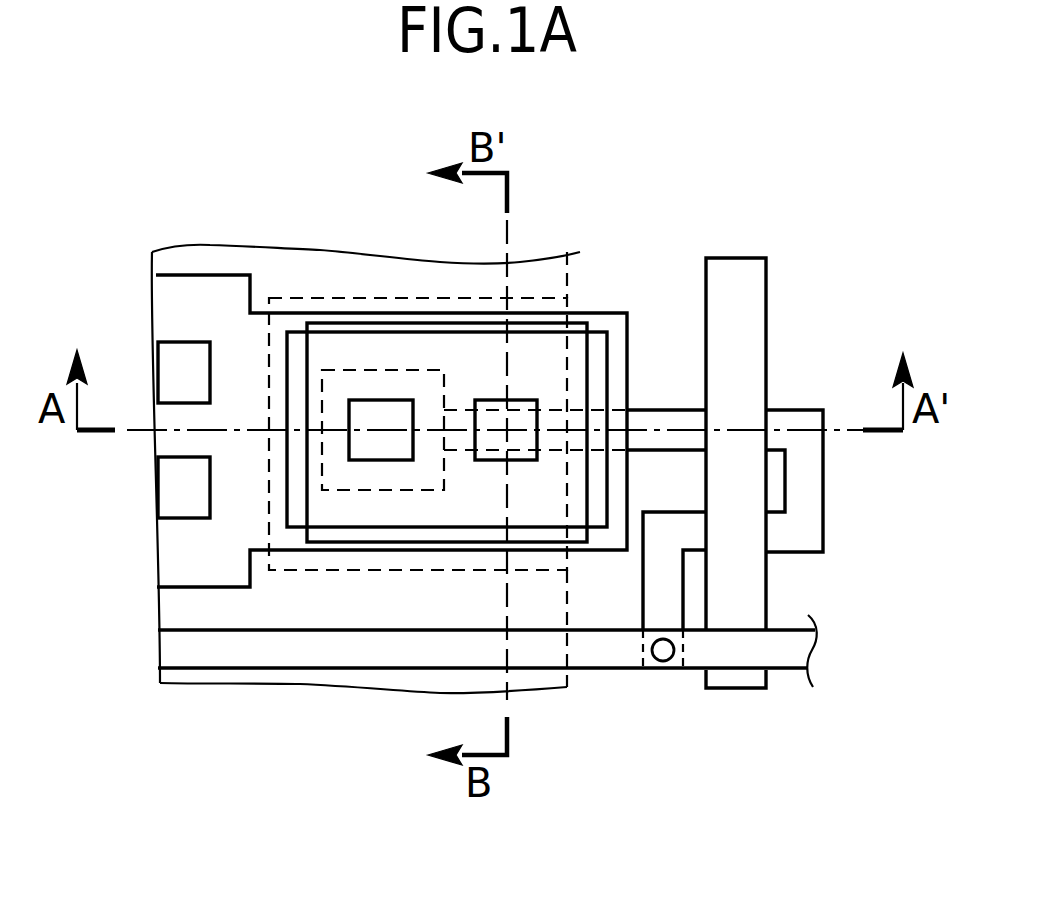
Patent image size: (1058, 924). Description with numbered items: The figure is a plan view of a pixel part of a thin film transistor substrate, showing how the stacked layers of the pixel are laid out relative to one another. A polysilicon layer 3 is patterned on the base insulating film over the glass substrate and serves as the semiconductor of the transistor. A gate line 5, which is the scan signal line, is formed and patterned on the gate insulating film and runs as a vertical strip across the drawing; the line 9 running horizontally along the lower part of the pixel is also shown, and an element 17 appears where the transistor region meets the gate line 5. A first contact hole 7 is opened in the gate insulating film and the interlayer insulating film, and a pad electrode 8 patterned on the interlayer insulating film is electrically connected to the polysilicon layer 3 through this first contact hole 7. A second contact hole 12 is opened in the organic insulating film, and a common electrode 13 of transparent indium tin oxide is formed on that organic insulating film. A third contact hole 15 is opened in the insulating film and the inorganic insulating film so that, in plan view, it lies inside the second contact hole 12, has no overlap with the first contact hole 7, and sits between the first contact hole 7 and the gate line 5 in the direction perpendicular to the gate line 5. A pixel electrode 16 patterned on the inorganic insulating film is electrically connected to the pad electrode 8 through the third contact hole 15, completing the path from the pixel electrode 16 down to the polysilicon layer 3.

The polysilicon layer 3 is at (807, 528).
The gate line 5 is at (767, 276).
The first contact hole 7 is at (360, 398).
The pad electrode 8 is at (610, 354).
The gate line 9 is at (782, 646).
The second contact hole 12 is at (572, 542).
The common electrode 13 is at (297, 612).
The third contact hole 15 is at (528, 398).
The pixel electrode 16 is at (165, 560).
The connection electrode 17 is at (767, 392).